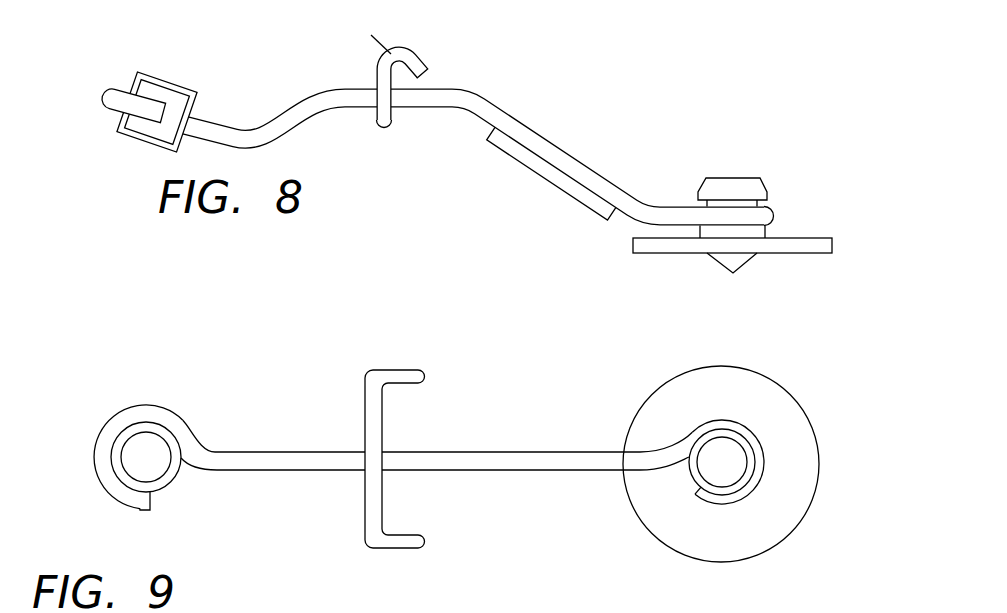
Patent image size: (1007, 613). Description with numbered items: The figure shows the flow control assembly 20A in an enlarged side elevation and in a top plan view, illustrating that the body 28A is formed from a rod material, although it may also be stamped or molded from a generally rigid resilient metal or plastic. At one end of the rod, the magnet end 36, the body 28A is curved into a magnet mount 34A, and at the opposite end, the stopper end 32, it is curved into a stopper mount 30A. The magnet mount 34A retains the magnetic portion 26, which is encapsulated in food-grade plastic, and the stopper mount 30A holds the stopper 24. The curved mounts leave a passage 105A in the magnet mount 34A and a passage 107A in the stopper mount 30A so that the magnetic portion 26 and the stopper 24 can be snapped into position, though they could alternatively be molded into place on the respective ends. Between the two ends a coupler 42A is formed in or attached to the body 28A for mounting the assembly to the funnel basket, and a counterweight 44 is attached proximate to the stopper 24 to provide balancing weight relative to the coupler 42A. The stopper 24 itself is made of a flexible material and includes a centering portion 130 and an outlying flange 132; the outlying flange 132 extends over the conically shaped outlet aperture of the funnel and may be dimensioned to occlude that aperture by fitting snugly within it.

In FIG. 8, the flow control assembly 20A is at (717, 122).
In FIG. 9, the flow control assembly 20A is at (100, 312).
In FIG. 8, the stopper 24 is at (743, 287).
In FIG. 9, the stopper 24 is at (823, 462).
In FIG. 9, the magnetic portion 26 is at (138, 448).
In FIG. 8, the body 28A is at (407, 142).
In FIG. 9, the body 28A is at (303, 488).
In FIG. 8, the stopper mount 30A is at (767, 218).
In FIG. 9, the stopper mount 30A is at (753, 438).
In FIG. 8, the stopper end 32 is at (583, 113).
In FIG. 9, the stopper end 32 is at (540, 430).
In FIG. 8, the magnet mount 34A is at (112, 98).
In FIG. 9, the magnet mount 34A is at (147, 415).
In FIG. 8, the magnet end 36 is at (280, 96).
In FIG. 9, the magnet end 36 is at (268, 438).
In FIG. 9, the coupler 42A is at (392, 372).
In FIG. 8, the counterweight 44 is at (553, 183).
In FIG. 9, the passage 105A is at (173, 478).
In FIG. 9, the passage 107A is at (693, 488).
In FIG. 8, the centering portion 130 is at (743, 260).
In FIG. 8, the outlying flange 132 is at (832, 243).
In FIG. 9, the outlying flange 132 is at (797, 493).